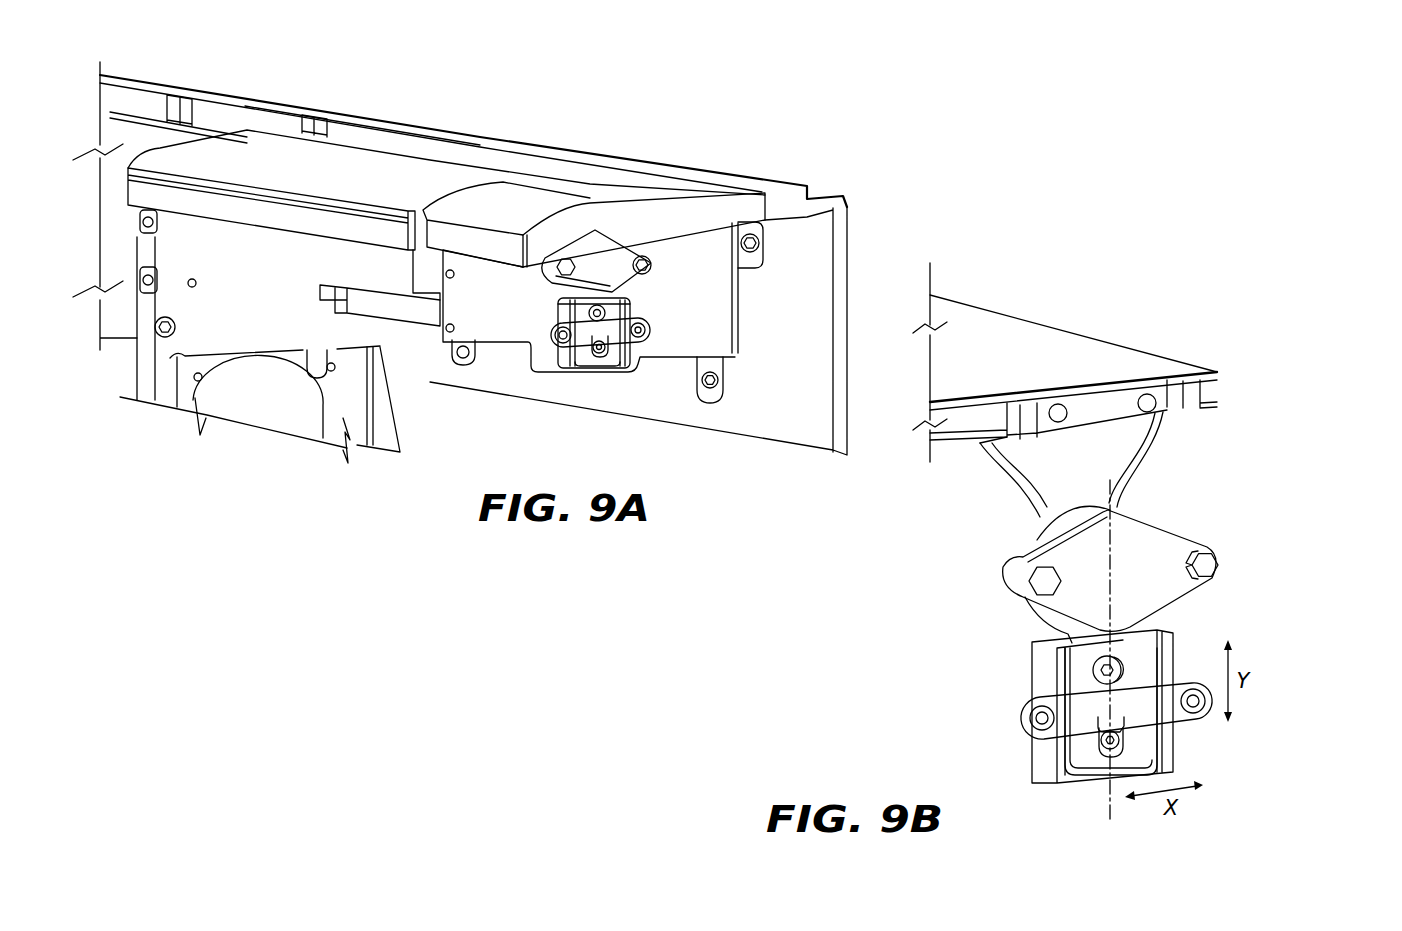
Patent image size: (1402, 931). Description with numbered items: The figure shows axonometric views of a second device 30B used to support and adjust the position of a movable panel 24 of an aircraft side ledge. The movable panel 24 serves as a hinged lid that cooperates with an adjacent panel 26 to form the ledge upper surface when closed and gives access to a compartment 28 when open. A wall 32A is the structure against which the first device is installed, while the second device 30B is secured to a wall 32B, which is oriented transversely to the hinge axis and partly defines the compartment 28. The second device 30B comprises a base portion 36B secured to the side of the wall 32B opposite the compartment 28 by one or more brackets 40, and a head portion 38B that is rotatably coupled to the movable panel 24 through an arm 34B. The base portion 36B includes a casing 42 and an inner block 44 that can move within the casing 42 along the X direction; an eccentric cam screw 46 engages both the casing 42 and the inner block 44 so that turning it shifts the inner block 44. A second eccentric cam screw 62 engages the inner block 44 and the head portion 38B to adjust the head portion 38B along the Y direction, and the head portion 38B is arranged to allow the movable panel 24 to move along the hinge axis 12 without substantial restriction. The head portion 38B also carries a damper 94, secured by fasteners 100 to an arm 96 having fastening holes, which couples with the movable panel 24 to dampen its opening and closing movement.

In FIG. 9B, the axis 12 is at (1110, 490).
In FIG. 9A, the movable panel 24 is at (311, 187).
In FIG. 9A, the adjacent panel 26 is at (677, 190).
In FIG. 9A, the compartment 28 is at (346, 368).
In FIG. 9B, the compartment 28 is at (942, 529).
In FIG. 9A, the second device 30B is at (654, 342).
In FIG. 9B, the second device 30B is at (1117, 649).
In FIG. 9A, the wall 32A is at (247, 287).
In FIG. 9A, the wall 32B is at (670, 333).
In FIG. 9B, the arm 34B is at (1077, 457).
In FIG. 9A, the base portion 36B is at (663, 317).
In FIG. 9B, the base portion 36B is at (1058, 725).
In FIG. 9A, the head portion 38B is at (654, 270).
In FIG. 9B, the head portion 38B is at (1086, 560).
In FIG. 9A, the bracket 40 is at (620, 365).
In FIG. 9B, the bracket 40 is at (1035, 745).
In FIG. 9B, the casing 42 is at (1040, 768).
In FIG. 9B, the inner block 44 is at (1080, 665).
In FIG. 9B, the cam screw 46 is at (1140, 740).
In FIG. 9B, the cam screw 62 is at (1093, 675).
In FIG. 9A, the damper 94 is at (585, 272).
In FIG. 9B, the damper 94 is at (1137, 535).
In FIG. 9B, the arm 96 is at (1045, 617).
In FIG. 9B, the fastener 100 is at (1207, 567).